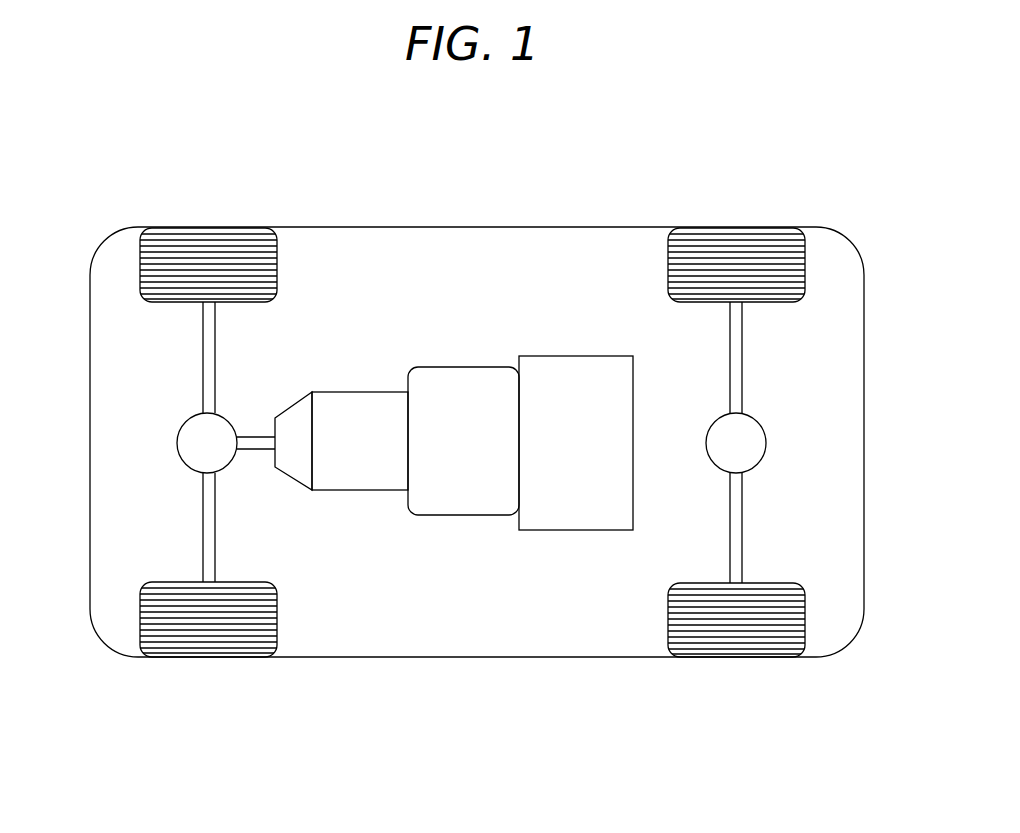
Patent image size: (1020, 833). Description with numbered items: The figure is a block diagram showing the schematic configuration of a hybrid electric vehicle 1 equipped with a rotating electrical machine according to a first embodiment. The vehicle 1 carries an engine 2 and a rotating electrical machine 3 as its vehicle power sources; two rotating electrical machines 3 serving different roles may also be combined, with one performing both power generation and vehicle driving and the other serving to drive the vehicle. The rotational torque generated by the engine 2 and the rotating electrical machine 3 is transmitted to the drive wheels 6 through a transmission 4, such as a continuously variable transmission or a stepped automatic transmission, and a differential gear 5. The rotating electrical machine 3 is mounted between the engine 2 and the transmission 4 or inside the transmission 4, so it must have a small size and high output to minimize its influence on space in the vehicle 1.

The vehicle 1 is at (838, 278).
The engine 2 is at (575, 356).
The rotating electrical machine 3 is at (468, 367).
The transmission 4 is at (372, 490).
The differential gear 5 is at (178, 445).
The wheels 6 is at (203, 238).